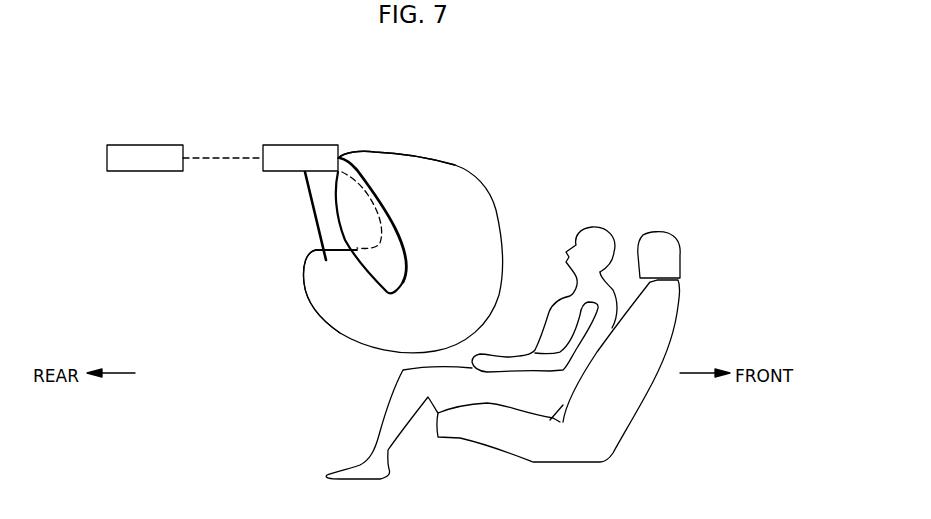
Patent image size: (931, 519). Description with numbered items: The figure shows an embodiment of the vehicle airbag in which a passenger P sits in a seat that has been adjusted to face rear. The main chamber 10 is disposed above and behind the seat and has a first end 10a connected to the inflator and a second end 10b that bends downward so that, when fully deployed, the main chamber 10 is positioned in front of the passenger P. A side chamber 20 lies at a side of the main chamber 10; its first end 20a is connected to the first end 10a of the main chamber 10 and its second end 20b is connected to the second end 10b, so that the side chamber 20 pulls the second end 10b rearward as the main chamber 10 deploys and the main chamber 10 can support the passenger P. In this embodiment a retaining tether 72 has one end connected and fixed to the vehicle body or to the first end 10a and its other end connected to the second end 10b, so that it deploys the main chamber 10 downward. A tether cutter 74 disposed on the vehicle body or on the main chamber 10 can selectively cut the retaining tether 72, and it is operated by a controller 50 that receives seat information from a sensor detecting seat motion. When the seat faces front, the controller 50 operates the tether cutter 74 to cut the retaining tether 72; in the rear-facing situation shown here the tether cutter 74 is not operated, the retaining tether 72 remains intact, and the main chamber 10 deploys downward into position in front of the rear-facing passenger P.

The controller 50 is at (147, 143).
The tether cutter 74 is at (287, 143).
The retaining tether 72 is at (315, 235).
The main chamber 10 is at (468, 187).
The first end of the main chamber 10a is at (367, 160).
The second end of the main chamber 10b is at (330, 298).
The side chamber 20 is at (358, 200).
The first end of the side chamber 20a is at (352, 182).
The second end of the side chamber 20b is at (380, 272).
The passenger P is at (557, 385).